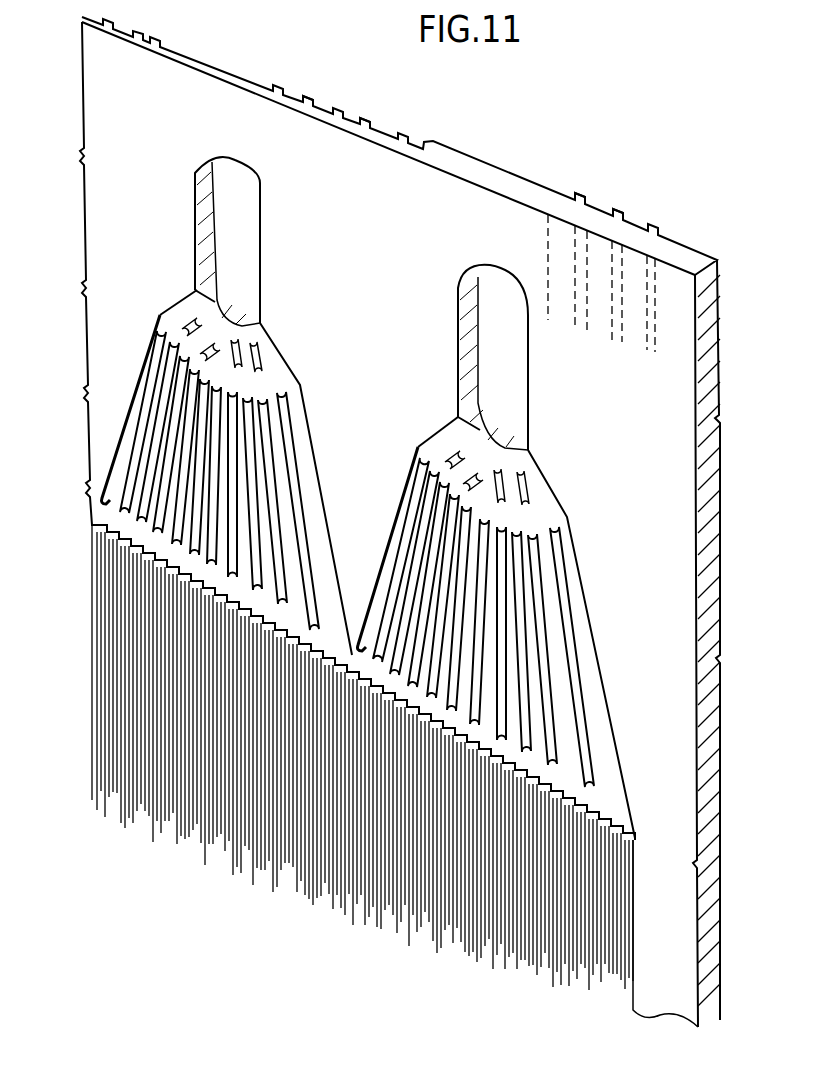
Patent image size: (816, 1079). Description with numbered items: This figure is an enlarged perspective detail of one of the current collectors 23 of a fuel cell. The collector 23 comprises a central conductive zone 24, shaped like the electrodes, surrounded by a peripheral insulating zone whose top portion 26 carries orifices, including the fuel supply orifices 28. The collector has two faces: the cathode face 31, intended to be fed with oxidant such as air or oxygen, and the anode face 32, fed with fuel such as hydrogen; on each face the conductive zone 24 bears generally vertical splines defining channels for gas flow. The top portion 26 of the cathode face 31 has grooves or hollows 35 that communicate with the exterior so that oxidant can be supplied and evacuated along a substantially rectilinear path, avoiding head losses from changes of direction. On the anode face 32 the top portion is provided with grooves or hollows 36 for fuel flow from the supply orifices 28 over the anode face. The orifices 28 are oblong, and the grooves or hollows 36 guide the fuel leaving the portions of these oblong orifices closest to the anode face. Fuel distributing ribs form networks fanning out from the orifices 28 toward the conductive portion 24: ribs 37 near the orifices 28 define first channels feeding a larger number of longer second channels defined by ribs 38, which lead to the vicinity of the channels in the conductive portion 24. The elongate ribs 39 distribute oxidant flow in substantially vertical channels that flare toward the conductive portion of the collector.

The current collector 23 is at (247, 58).
The central conductive zone 24 is at (318, 832).
The top portion of the insulating zone 26 is at (128, 107).
The fuel supply orifice 28 is at (237, 218).
The cathode face 31 is at (672, 322).
The anode face 32 is at (474, 211).
The grooves or hollows for oxidant 35 is at (292, 100).
The grooves or hollows for fuel 36 is at (205, 326).
The ribs 37 is at (250, 345).
The ribs 38 is at (265, 437).
The ribs for distributing the oxidant flow 39 is at (372, 137).